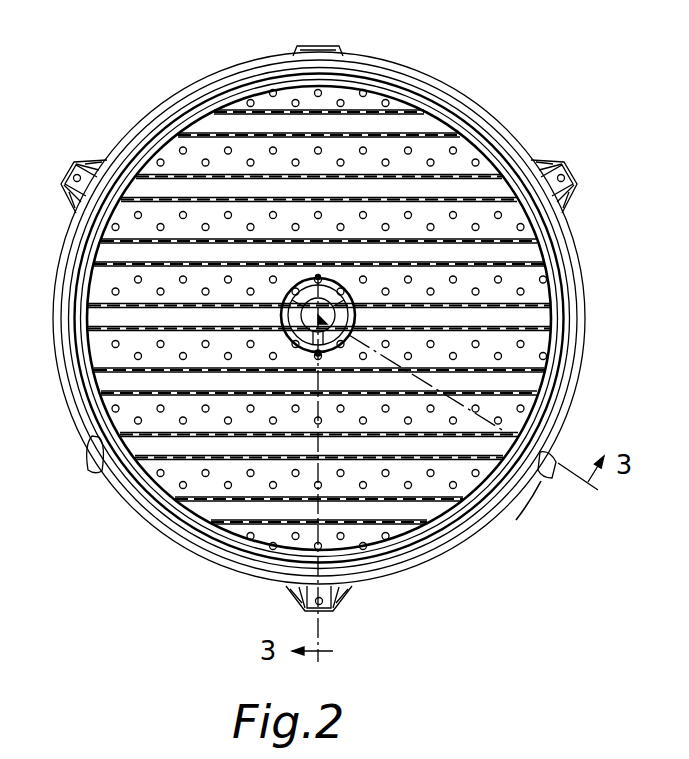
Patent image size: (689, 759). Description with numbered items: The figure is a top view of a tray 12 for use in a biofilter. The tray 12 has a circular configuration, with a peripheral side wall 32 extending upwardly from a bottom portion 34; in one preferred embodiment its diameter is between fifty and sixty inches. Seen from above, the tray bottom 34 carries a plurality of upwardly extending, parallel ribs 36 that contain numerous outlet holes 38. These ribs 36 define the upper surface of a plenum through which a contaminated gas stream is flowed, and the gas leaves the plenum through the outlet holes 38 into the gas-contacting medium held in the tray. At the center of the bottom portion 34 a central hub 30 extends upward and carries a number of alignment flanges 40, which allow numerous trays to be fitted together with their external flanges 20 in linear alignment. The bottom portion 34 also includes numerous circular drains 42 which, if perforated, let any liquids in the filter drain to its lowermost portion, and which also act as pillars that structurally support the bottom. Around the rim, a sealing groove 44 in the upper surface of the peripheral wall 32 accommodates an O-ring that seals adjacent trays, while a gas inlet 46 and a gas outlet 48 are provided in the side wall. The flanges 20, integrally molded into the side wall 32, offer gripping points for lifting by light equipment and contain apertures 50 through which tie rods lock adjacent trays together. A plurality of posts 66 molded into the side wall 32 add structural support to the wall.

The tray 12 is at (448, 75).
The external flanges 20 is at (579, 208).
The central hub 30 is at (300, 291).
The peripheral side wall 32 is at (498, 113).
The bottom portion 34 is at (190, 160).
The parallel ribs 36 is at (540, 318).
The outlet holes 38 is at (528, 374).
The alignment flanges 40 is at (285, 327).
The circular drains 42 is at (405, 545).
The sealing groove 44 is at (546, 499).
The gas inlet 46 is at (92, 462).
The gas outlet 48 is at (334, 46).
The apertures 50 is at (563, 176).
The posts 66 is at (547, 468).